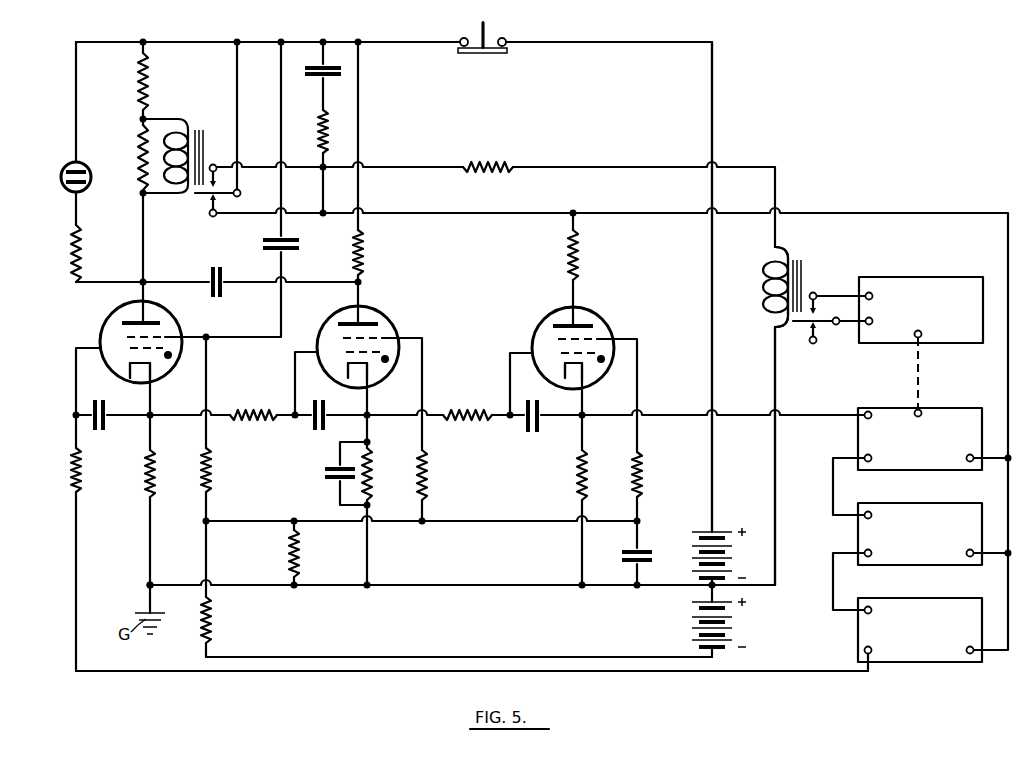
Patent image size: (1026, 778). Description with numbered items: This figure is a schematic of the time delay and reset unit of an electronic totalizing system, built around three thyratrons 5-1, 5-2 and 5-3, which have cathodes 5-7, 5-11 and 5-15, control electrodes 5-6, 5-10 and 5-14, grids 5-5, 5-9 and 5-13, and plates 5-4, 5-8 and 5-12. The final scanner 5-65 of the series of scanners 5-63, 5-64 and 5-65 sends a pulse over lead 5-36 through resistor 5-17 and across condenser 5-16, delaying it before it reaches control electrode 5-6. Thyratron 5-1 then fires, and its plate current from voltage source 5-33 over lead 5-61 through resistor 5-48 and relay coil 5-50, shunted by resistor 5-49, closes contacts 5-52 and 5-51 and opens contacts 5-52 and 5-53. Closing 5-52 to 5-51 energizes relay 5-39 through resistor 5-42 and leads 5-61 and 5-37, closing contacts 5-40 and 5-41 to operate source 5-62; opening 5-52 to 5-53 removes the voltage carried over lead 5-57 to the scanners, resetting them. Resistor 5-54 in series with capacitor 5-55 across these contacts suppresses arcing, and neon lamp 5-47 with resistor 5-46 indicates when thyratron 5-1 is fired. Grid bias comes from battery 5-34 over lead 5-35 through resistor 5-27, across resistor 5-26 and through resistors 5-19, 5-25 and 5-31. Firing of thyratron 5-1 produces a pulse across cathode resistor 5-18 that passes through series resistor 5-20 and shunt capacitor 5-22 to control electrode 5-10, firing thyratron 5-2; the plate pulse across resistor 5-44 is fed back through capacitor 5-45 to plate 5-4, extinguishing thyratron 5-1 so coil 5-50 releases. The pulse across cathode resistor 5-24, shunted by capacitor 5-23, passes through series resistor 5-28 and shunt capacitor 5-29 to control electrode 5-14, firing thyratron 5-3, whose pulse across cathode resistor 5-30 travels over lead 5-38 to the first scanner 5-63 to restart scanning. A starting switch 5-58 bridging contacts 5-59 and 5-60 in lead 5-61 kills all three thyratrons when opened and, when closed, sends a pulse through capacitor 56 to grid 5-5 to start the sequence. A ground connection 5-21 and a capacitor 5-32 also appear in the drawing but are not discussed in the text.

The first thyratron 5-1 is at (172, 327).
The second thyratron 5-2 is at (387, 330).
The third thyratron 5-3 is at (605, 331).
The plate 5-4 is at (138, 321).
The grid 5-5 is at (127, 337).
The control electrode 5-6 is at (128, 350).
The cathode 5-7 is at (138, 366).
The plate 5-8 is at (352, 320).
The grid 5-9 is at (343, 338).
The control electrode 5-10 is at (346, 354).
The cathode 5-11 is at (352, 366).
The plate 5-12 is at (568, 322).
The grid 5-13 is at (558, 339).
The control electrode 5-14 is at (561, 355).
The cathode 5-15 is at (568, 366).
The condenser 5-16 is at (105, 424).
The resistor 5-17 is at (74, 462).
The cathode resistor 5-18 is at (154, 479).
The resistor 5-19 is at (210, 458).
The resistor 5-20 is at (248, 401).
The ground junction 5-21 is at (166, 578).
The capacitor 5-22 is at (312, 426).
The capacitor 5-23 is at (338, 477).
The cathode resistor 5-24 is at (369, 481).
The resistor 5-25 is at (426, 473).
The resistor 5-26 is at (297, 571).
The resistor 5-27 is at (210, 622).
The series resistor 5-28 is at (444, 413).
The shunt capacitor 5-29 is at (527, 431).
The cathode resistor 5-30 is at (580, 470).
The resistor 5-31 is at (641, 478).
The capacitor 5-32 is at (641, 552).
The voltage source 5-33 is at (722, 563).
The battery 5-34 is at (722, 631).
The lead 5-35 is at (427, 656).
The lead 5-36 is at (323, 672).
The lead 5-37 is at (775, 478).
The lead 5-38 is at (729, 410).
The relay 5-39 is at (762, 290).
The contact 5-40 is at (822, 284).
The contact 5-41 is at (836, 325).
The resistor 5-42 is at (481, 155).
The resistor 5-44 is at (359, 257).
The capacitor 5-45 is at (212, 278).
The resistor 5-46 is at (75, 249).
The neon lamp 5-47 is at (66, 184).
The resistor 5-48 is at (144, 86).
The resistor 5-49 is at (142, 151).
The relay coil 5-50 is at (186, 128).
The relay contact 5-51 is at (213, 164).
The relay contact 5-52 is at (262, 191).
The relay contact 5-53 is at (210, 215).
The resistor 5-54 is at (320, 122).
The capacitor 5-55 is at (321, 78).
The capacitor 56 is at (287, 249).
The lead 5-57 is at (511, 215).
The starting switch 5-58 is at (483, 54).
The contact 5-59 is at (462, 39).
The contact 5-60 is at (505, 39).
The lead 5-61 is at (713, 112).
The source 5-62 is at (918, 277).
The first scanner 5-63 is at (858, 436).
The scanner 5-64 is at (858, 533).
The final scanner 5-65 is at (858, 628).